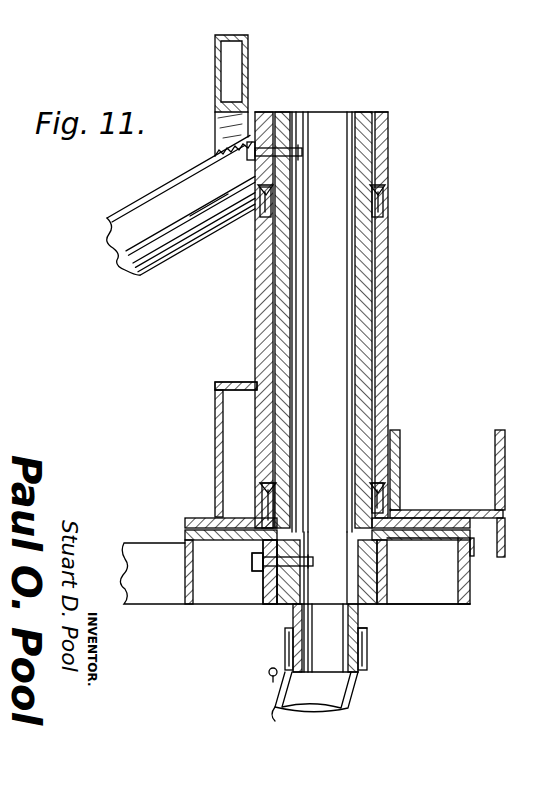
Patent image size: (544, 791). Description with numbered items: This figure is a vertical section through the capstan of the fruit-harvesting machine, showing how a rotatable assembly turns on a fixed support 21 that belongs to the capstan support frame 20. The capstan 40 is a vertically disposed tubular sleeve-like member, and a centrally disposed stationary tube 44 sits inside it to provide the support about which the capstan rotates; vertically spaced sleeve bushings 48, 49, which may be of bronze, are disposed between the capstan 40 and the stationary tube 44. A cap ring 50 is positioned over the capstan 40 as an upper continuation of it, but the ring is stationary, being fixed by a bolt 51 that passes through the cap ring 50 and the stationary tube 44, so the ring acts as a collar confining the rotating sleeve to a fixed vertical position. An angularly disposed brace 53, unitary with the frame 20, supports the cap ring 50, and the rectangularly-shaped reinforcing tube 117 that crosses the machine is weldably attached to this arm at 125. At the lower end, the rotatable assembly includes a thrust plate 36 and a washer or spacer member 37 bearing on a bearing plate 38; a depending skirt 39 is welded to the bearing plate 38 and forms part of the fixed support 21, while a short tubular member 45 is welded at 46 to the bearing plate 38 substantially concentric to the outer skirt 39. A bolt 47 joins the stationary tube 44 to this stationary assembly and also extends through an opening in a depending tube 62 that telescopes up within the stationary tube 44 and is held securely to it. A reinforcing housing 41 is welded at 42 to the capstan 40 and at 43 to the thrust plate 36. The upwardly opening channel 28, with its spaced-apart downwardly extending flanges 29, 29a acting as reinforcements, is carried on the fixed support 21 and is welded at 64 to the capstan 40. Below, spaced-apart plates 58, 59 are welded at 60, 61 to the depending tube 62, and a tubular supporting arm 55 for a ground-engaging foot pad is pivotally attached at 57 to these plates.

The capstan support frame 20 is at (126, 545).
The fixed support 21 is at (468, 612).
The upwardly opening channel 28 is at (496, 452).
The downwardly extending flange 29 is at (506, 544).
The downwardly extending flange 29a is at (474, 552).
The thrust plate 36 is at (190, 518).
The washer or spacer member 37 is at (186, 522).
The bearing plate 38 is at (230, 540).
The depending skirt 39 is at (186, 582).
The capstan 40 is at (256, 305).
The reinforcing housing 41 is at (215, 408).
The weld 42 is at (255, 380).
The weld 43 is at (218, 520).
The stationary tube 44 is at (374, 305).
The short tubular member 45 is at (270, 605).
The weld 46 is at (258, 562).
The bolt 47 is at (266, 600).
The sleeve bushing 48 is at (386, 196).
The sleeve bushing 49 is at (384, 492).
The cap ring 50 is at (386, 113).
The bolt 51 is at (262, 188).
The angularly disposed brace 53 is at (172, 188).
The tubular supporting arm 55 is at (340, 696).
The pivot 57 is at (270, 678).
The plate 58 is at (276, 710).
The plate 59 is at (368, 655).
The weld 60 is at (284, 632).
The weld 61 is at (368, 626).
The depending tube 62 is at (388, 604).
The weld 64 is at (394, 430).
The rectangularly-shaped reinforcing tube 117 is at (246, 60).
The weld 125 is at (215, 113).